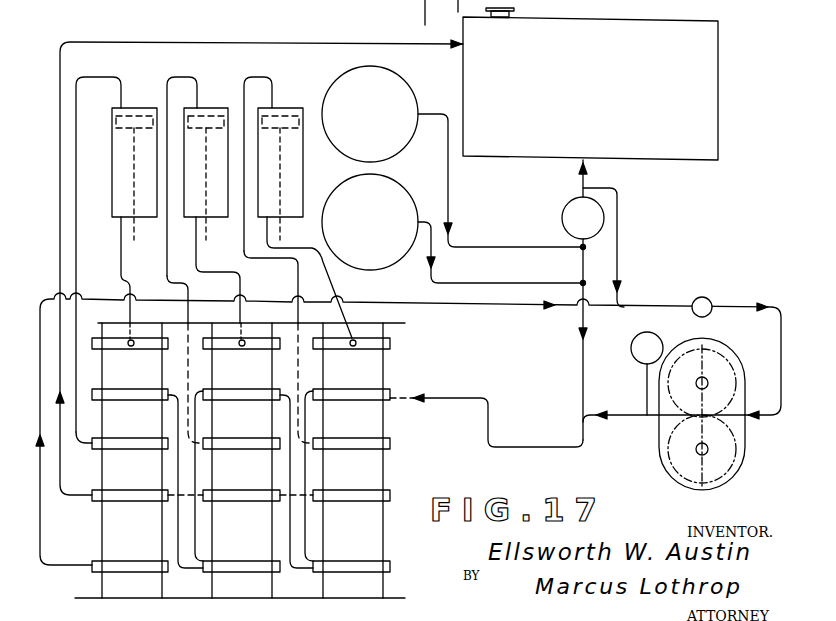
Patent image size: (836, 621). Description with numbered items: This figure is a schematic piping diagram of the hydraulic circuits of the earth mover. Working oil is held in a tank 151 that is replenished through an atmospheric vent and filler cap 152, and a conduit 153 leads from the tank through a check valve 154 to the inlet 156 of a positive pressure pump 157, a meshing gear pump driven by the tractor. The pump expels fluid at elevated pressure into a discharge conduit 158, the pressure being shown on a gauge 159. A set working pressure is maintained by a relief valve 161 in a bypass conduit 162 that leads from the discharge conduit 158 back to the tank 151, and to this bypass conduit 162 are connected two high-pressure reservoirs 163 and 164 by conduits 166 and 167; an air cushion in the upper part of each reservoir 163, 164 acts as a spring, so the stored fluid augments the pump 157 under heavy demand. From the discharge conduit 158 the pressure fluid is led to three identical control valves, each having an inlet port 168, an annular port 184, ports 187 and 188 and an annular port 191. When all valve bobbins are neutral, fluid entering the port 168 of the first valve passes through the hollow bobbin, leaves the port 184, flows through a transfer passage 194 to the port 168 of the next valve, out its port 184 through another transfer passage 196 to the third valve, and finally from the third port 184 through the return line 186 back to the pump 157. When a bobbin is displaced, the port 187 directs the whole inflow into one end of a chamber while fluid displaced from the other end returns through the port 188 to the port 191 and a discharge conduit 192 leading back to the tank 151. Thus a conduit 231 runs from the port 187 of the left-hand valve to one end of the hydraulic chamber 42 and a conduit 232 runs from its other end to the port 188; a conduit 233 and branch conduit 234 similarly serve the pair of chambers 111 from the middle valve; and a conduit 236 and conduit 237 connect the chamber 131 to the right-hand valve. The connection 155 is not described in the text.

The hydraulic chamber 42 is at (135, 108).
The pair of chambers 111 is at (222, 108).
The chamber 131 is at (297, 108).
The tank 151 is at (721, 104).
The filler cap 152 is at (514, 10).
The conduit 153 is at (621, 236).
The check valve 154 is at (707, 301).
The connecting line 155 is at (441, 12).
The inlet 156 is at (752, 420).
The positive pressure pump 157 is at (733, 358).
The discharge conduit 158 is at (622, 417).
The gauge 159 is at (636, 358).
The relief valve 161 is at (562, 218).
The bypass conduit 162 is at (580, 362).
The reservoir 163 is at (409, 88).
The reservoir 164 is at (404, 194).
The conduit 166 is at (478, 247).
The conduit 167 is at (511, 282).
The inlet port 168 is at (390, 393).
The annular port 184 is at (141, 567).
The return line 186 is at (486, 307).
The annular port 187 is at (142, 358).
The port 188 is at (252, 408).
The annular port 191 is at (137, 468).
The discharge conduit 192 is at (198, 33).
The transfer passage 194 is at (305, 519).
The transfer passage 196 is at (178, 520).
The conduit 231 is at (121, 262).
The conduit 232 is at (97, 76).
The conduit 233 is at (238, 281).
The branch conduit 234 is at (179, 76).
The conduit 236 is at (337, 290).
The conduit 237 is at (257, 76).